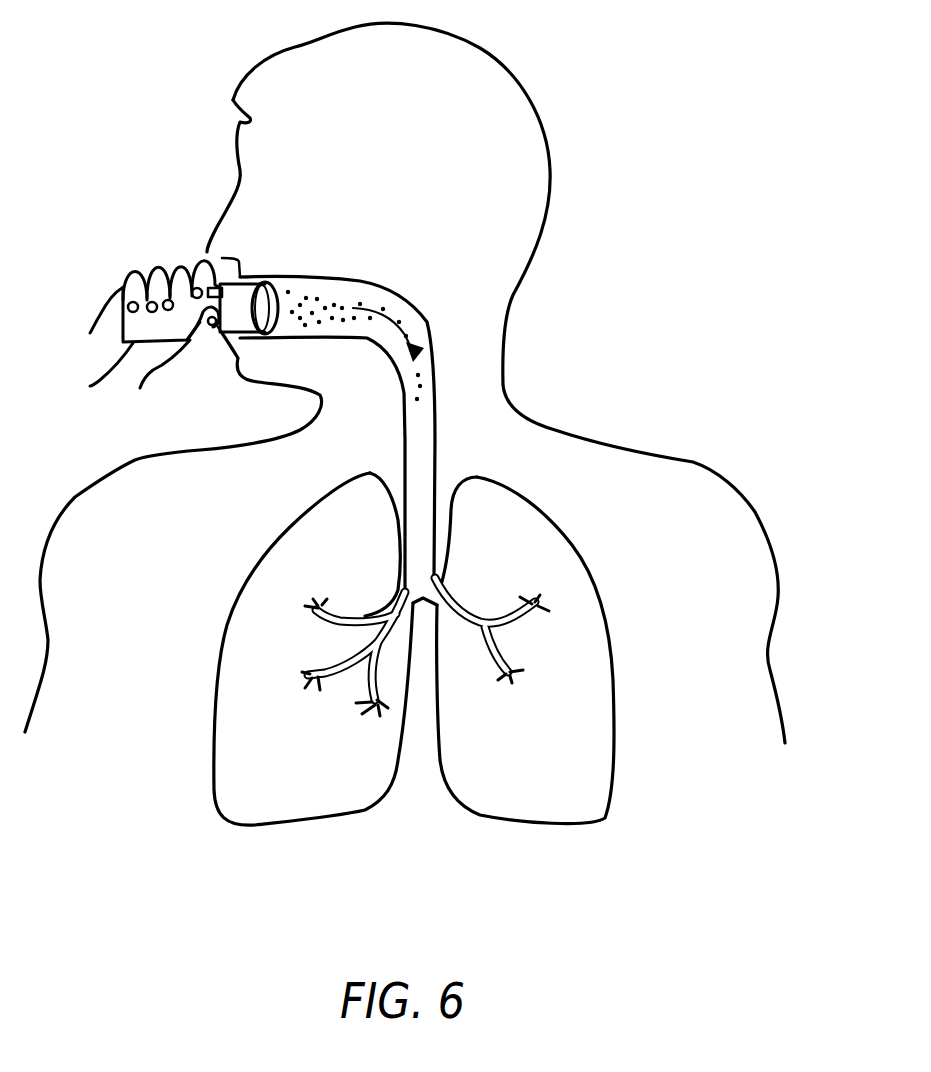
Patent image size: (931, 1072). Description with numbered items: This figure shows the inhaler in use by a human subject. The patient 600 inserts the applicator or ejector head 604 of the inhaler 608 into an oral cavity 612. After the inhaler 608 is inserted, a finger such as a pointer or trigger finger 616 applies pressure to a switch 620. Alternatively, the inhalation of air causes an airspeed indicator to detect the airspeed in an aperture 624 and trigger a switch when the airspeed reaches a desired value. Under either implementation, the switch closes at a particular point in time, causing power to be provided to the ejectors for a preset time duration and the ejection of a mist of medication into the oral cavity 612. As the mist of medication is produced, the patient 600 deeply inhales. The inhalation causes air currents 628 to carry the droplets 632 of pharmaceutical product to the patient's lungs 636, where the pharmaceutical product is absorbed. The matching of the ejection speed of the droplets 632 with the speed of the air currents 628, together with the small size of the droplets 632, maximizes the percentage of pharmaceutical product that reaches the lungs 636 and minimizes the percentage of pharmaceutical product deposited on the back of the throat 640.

The patient 600 is at (523, 86).
The applicator or ejector head 604 is at (268, 290).
The inhaler 608 is at (143, 332).
The oral cavity 612 is at (325, 294).
The pointer or trigger finger 616 is at (200, 267).
The switch 620 is at (220, 285).
The aperture 624 is at (230, 342).
The air currents 628 is at (395, 322).
The droplets 632 is at (358, 298).
The lungs 636 is at (520, 798).
The back of the throat 640 is at (427, 313).